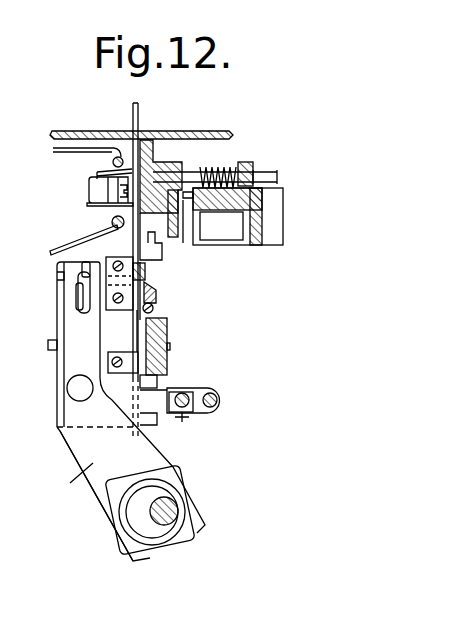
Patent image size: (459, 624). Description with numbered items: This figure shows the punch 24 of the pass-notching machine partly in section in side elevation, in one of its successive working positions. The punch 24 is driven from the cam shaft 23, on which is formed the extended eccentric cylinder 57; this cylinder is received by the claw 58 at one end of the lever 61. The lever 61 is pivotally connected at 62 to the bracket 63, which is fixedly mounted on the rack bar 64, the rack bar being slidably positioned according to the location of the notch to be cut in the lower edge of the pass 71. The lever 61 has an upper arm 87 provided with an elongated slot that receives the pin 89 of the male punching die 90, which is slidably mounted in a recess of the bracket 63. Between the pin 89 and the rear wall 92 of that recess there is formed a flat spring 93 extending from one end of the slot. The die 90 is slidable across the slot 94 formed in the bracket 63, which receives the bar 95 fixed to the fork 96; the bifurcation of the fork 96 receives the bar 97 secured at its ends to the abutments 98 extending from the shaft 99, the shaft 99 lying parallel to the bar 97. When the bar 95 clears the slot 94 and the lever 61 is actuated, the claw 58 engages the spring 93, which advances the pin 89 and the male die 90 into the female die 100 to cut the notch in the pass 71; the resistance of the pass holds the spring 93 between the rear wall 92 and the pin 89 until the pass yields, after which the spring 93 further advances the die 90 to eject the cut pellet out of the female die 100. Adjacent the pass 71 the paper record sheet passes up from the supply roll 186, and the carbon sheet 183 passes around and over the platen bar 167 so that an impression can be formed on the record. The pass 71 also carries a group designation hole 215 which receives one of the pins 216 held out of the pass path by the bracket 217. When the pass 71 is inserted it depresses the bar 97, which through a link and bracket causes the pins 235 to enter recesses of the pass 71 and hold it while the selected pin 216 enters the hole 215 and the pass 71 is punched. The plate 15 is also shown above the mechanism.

The top plate 15 is at (186, 131).
The pass 71 is at (142, 115).
The supply roll 186 is at (60, 148).
The carbon sheet 183 is at (104, 170).
The platen bar 167 is at (90, 188).
The pin 89 is at (86, 262).
The male punching die 90 is at (102, 266).
The hole 215 is at (162, 162).
The pins 235 is at (185, 202).
The pins 216 is at (190, 171).
The bracket 217 is at (292, 208).
The slot 94 is at (150, 267).
The female die 100 is at (166, 289).
The bar 95 is at (137, 321).
The bracket 63 is at (122, 333).
The rack bar 64 is at (168, 323).
The rear wall 92 is at (78, 292).
The flat spring 93 is at (79, 305).
The upper arm 87 is at (72, 363).
The pivot 62 is at (72, 393).
The fork 96 is at (166, 389).
The abutments 98 is at (207, 388).
The bar 97 is at (178, 417).
The shaft 99 is at (222, 400).
The punch 24 is at (58, 452).
The lever 61 is at (74, 484).
The claw 58 is at (173, 477).
The eccentric cylinder 57 is at (165, 533).
The cam shaft 23 is at (172, 503).